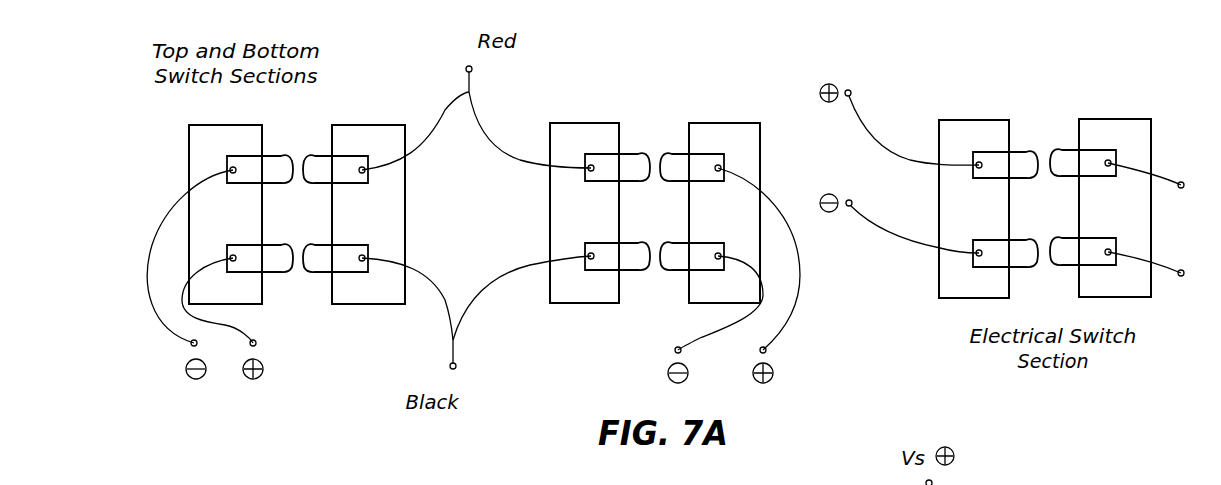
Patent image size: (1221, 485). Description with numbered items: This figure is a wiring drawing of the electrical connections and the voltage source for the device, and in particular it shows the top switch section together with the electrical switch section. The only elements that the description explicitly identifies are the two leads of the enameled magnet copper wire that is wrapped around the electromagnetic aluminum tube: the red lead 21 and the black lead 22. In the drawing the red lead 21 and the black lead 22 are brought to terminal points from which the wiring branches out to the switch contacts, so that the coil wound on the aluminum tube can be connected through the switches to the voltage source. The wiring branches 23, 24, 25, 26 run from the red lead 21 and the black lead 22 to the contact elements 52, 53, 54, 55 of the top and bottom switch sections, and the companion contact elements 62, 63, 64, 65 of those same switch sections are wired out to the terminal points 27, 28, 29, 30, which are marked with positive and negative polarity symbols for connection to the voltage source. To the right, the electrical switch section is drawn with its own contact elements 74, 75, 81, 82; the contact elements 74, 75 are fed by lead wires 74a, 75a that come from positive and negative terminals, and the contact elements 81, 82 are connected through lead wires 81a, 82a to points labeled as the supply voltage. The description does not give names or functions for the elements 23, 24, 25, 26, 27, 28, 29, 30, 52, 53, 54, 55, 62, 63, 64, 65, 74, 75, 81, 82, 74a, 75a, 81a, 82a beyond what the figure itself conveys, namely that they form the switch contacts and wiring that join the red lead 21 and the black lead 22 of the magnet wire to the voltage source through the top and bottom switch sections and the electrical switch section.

The red lead 21 is at (466, 67).
The black lead 22 is at (457, 369).
The wire 23 is at (437, 137).
The wire 24 is at (493, 148).
The wire 25 is at (446, 292).
The wire 26 is at (496, 280).
The negative terminal 27 is at (194, 380).
The positive terminal 28 is at (252, 380).
The positive terminal 29 is at (767, 348).
The negative terminal 30 is at (707, 340).
The switch contact 52 is at (318, 180).
The switch contact 53 is at (318, 268).
The switch contact 54 is at (598, 178).
The switch contact 55 is at (598, 266).
The switch contact 62 is at (241, 180).
The switch contact 63 is at (241, 268).
The switch contact 64 is at (677, 178).
The switch contact 65 is at (677, 266).
The switch contact 74 is at (990, 175).
The switch contact 75 is at (990, 263).
The switch contact 81 is at (1061, 173).
The switch contact 82 is at (1061, 262).
The lead wire 74a is at (870, 139).
The lead wire 75a is at (877, 230).
The lead wire 81a is at (1165, 172).
The lead wire 82a is at (1165, 262).